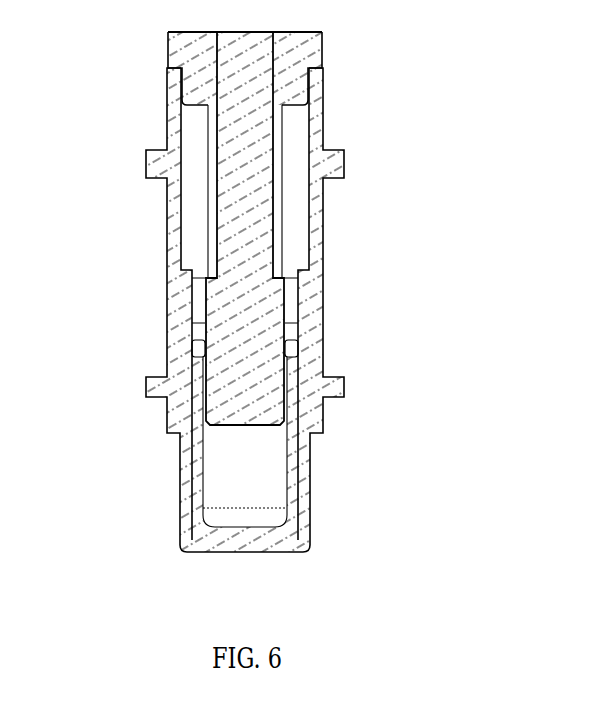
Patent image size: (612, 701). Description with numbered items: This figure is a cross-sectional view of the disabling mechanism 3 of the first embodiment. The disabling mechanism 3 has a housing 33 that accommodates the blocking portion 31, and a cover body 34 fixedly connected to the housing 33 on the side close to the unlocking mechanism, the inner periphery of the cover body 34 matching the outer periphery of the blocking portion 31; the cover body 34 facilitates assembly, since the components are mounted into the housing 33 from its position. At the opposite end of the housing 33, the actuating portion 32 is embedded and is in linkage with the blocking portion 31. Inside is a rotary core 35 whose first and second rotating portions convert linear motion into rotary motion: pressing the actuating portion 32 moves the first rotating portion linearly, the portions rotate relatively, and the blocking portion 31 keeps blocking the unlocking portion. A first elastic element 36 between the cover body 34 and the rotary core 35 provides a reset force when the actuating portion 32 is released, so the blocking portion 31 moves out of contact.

The disabling mechanism 3 is at (238, 308).
The blocking portion 31 is at (247, 65).
The actuating portion 32 is at (278, 537).
The housing 33 is at (173, 288).
The cover body 34 is at (169, 52).
The rotary core 35 is at (299, 342).
The first elastic element 36 is at (281, 173).